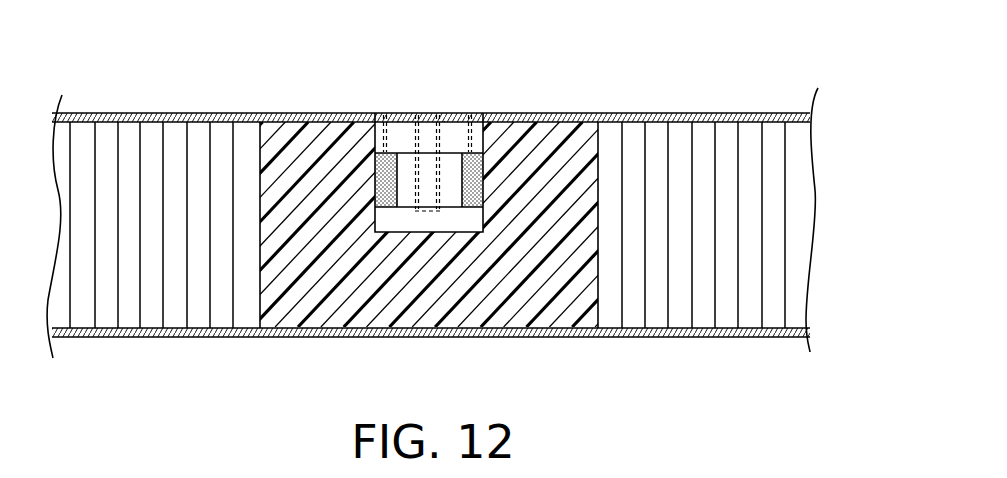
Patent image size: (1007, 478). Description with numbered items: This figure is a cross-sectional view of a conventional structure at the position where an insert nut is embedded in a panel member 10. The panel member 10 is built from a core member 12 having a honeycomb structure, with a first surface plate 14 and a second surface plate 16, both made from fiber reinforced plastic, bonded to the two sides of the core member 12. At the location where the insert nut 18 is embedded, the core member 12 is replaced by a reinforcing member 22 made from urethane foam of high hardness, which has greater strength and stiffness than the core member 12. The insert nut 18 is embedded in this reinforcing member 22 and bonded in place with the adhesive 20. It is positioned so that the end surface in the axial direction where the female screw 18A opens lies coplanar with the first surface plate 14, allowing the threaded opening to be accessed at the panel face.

The panel member 10 is at (710, 105).
The core member 12 is at (175, 132).
The first surface plate 14 is at (223, 118).
The second surface plate 16 is at (218, 337).
The insert nut 18 is at (460, 120).
The female screw 18A is at (426, 133).
The adhesive 20 is at (385, 170).
The reinforcing member 22 is at (555, 143).